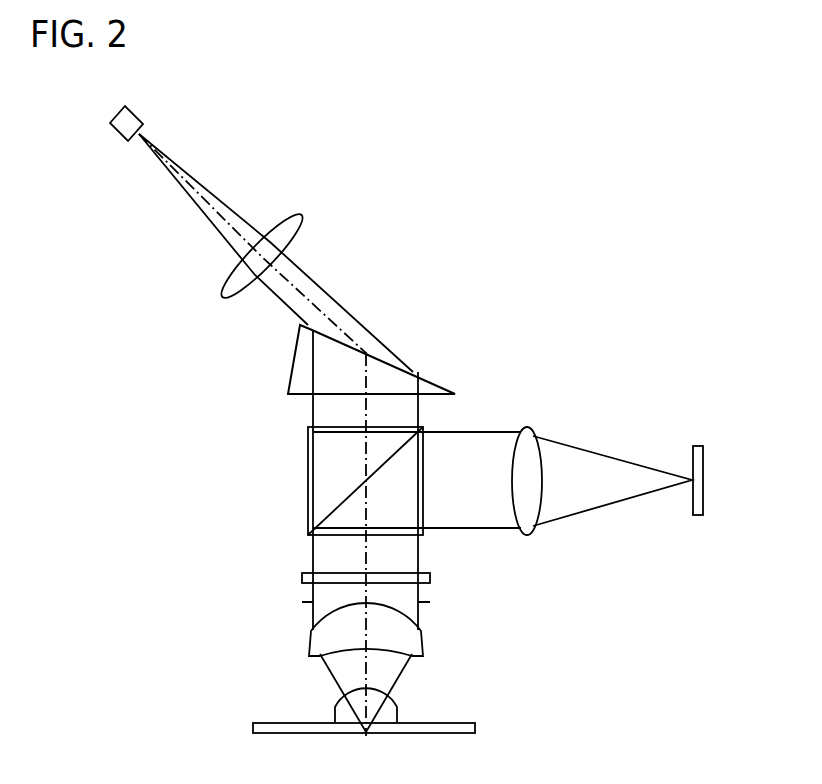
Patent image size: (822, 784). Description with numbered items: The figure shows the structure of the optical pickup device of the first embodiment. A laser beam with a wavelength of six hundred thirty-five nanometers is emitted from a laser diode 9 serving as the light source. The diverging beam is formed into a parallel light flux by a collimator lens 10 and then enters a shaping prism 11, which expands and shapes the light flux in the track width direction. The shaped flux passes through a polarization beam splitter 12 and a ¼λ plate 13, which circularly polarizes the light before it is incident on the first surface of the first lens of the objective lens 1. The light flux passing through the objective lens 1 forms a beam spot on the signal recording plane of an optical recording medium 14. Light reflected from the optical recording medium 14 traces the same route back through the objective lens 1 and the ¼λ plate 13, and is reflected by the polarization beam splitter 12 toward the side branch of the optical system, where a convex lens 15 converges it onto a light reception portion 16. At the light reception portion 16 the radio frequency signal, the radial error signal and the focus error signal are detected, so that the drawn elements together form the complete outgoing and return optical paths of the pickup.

The objective lens 1 is at (423, 645).
The laser diode 9 is at (130, 120).
The collimator lens 10 is at (296, 222).
The shaping prism 11 is at (408, 385).
The polarization beam splitter 12 is at (326, 466).
The ¼λ plate 13 is at (303, 578).
The optical recording medium 14 is at (467, 722).
The convex lens 15 is at (528, 430).
The light reception portion 16 is at (697, 447).